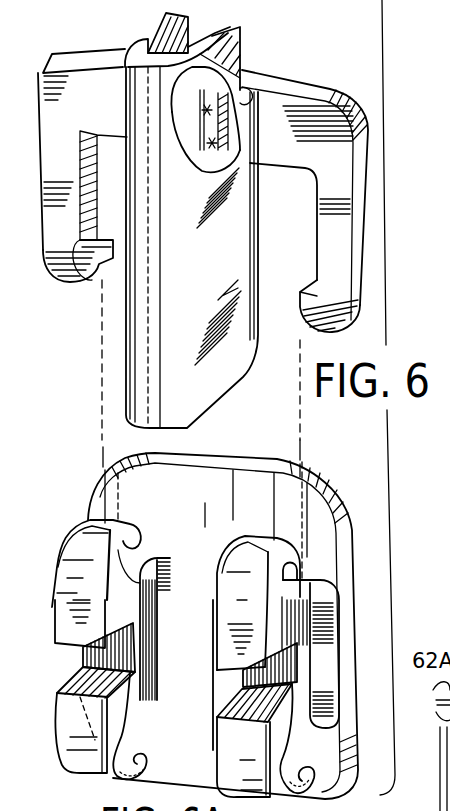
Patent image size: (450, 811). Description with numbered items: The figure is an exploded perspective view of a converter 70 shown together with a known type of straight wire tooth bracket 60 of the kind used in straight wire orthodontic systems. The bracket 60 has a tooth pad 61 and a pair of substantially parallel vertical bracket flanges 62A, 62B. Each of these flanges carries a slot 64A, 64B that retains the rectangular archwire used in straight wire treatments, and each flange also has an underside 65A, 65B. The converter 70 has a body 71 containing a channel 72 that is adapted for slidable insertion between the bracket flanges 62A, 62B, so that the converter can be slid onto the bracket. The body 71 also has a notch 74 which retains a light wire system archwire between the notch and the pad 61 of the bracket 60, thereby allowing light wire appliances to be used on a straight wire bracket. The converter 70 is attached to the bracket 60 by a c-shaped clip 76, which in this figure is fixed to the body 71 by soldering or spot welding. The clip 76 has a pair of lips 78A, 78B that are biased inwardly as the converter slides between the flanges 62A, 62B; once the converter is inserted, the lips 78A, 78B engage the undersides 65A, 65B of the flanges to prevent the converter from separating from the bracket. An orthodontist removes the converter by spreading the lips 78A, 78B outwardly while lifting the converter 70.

The straight wire tooth bracket 60 is at (322, 476).
The tooth pad 61 is at (204, 522).
The bracket flange 62A is at (105, 522).
The bracket flange 62B is at (233, 553).
The slot 64A is at (152, 637).
The slot 64B is at (230, 690).
The underside 65A is at (130, 713).
The underside 65B is at (310, 790).
The converter 70 is at (240, 379).
The body 71 is at (150, 312).
The channel 72 is at (146, 45).
The notch 74 is at (252, 92).
The c-shaped clip 76 is at (333, 245).
The lip 78A is at (84, 282).
The lip 78B is at (317, 285).